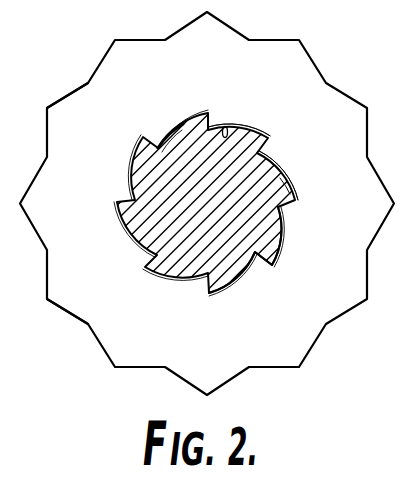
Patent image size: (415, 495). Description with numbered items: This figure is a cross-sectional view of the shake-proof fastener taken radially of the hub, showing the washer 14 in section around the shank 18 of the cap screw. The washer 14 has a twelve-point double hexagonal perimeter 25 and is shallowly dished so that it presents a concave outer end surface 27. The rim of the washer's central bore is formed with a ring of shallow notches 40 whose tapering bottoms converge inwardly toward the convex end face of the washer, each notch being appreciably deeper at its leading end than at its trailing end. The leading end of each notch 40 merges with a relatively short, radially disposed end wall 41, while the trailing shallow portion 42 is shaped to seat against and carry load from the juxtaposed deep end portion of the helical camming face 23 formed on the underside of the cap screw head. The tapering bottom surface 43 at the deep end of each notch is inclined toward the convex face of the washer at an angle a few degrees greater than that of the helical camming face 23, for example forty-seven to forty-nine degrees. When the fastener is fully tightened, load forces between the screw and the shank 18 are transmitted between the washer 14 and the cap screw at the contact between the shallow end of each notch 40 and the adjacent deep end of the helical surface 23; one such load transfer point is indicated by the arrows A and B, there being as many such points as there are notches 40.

The washer 14 is at (345, 93).
The double hexagonal perimeter 25 is at (62, 97).
The concave outer end surface 27 is at (120, 302).
The shank 18 is at (147, 216).
The helical camming face 23 is at (252, 132).
The shallow notches 40 is at (287, 242).
The radially disposed end wall 41 is at (288, 196).
The trailing shallow portion 42 is at (225, 127).
The tapering bottom surface 43 is at (284, 187).
The arrow A is at (165, 132).
The arrow B is at (173, 138).